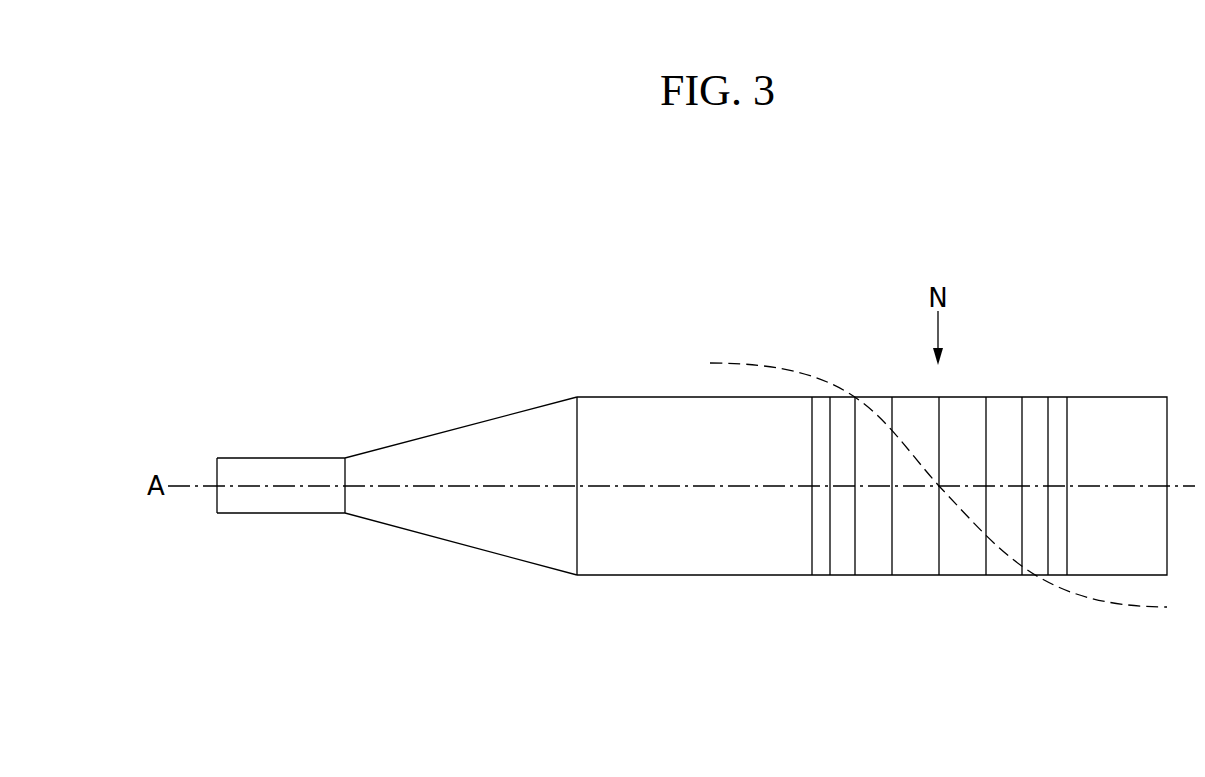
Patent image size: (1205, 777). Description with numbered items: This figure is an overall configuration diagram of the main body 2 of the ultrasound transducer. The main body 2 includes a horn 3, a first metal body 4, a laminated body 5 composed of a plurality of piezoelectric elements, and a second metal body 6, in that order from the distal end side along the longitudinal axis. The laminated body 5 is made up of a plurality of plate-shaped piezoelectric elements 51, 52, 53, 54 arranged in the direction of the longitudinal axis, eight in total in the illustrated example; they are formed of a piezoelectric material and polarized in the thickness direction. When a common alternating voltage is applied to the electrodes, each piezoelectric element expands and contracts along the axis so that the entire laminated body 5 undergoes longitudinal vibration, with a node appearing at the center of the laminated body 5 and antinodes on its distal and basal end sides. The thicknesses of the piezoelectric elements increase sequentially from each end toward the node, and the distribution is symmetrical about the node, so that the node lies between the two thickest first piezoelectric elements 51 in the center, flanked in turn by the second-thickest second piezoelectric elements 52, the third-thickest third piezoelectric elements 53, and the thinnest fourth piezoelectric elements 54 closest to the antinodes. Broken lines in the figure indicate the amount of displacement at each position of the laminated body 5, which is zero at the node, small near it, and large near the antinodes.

The main body 2 is at (328, 272).
The horn 3 is at (217, 618).
The first metal body 4 is at (810, 618).
The laminated body 5 is at (937, 497).
The second metal body 6 is at (1167, 618).
The first piezoelectric element 51 is at (915, 397).
The second piezoelectric element 52 is at (873, 397).
The third piezoelectric element 53 is at (845, 397).
The fourth piezoelectric element 54 is at (827, 397).